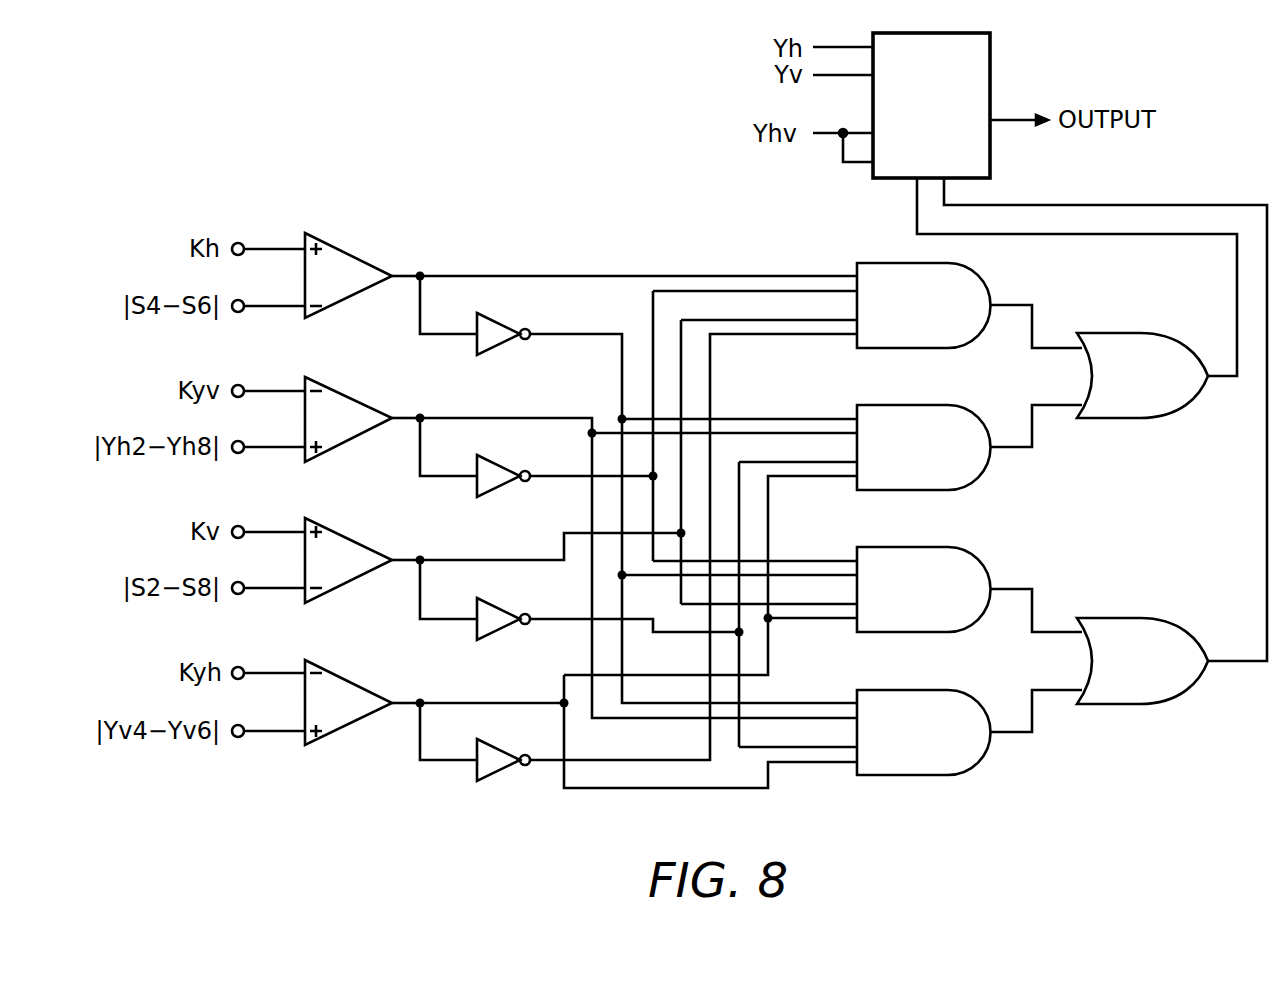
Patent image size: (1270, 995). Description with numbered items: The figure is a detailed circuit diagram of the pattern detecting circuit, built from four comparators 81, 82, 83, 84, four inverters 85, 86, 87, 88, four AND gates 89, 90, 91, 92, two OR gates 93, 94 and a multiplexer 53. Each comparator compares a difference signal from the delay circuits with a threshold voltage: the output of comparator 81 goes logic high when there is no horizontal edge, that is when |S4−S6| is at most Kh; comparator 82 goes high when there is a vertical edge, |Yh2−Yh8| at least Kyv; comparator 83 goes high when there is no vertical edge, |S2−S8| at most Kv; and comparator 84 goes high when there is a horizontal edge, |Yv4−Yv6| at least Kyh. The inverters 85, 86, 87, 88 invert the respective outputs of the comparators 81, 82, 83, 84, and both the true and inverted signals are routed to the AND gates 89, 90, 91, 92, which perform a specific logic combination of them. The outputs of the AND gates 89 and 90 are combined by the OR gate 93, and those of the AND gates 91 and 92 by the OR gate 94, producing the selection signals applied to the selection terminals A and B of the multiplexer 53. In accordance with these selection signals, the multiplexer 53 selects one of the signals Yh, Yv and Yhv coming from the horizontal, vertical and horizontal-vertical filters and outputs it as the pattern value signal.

The multiplexer 53 is at (993, 60).
The comparator 81 is at (330, 247).
The comparator 82 is at (330, 389).
The comparator 83 is at (330, 530).
The comparator 84 is at (330, 672).
The inverter 85 is at (500, 325).
The inverter 86 is at (500, 467).
The inverter 87 is at (500, 610).
The inverter 88 is at (500, 751).
The AND gate 89 is at (950, 348).
The AND gate 90 is at (950, 490).
The AND gate 91 is at (950, 632).
The AND gate 92 is at (950, 775).
The OR gate 93 is at (1110, 333).
The OR gate 94 is at (1108, 618).